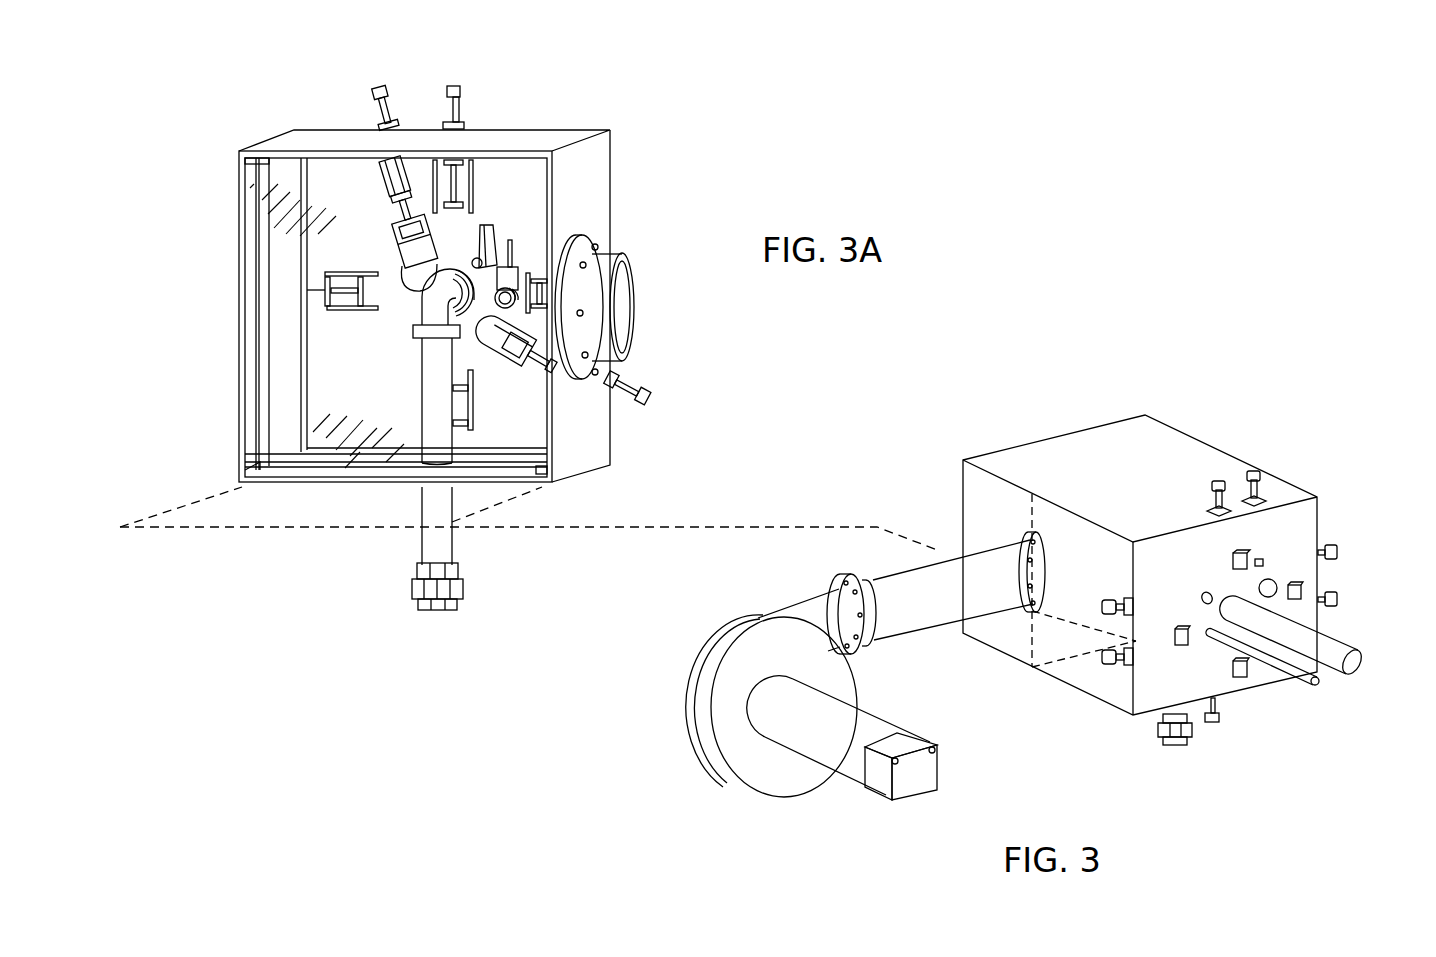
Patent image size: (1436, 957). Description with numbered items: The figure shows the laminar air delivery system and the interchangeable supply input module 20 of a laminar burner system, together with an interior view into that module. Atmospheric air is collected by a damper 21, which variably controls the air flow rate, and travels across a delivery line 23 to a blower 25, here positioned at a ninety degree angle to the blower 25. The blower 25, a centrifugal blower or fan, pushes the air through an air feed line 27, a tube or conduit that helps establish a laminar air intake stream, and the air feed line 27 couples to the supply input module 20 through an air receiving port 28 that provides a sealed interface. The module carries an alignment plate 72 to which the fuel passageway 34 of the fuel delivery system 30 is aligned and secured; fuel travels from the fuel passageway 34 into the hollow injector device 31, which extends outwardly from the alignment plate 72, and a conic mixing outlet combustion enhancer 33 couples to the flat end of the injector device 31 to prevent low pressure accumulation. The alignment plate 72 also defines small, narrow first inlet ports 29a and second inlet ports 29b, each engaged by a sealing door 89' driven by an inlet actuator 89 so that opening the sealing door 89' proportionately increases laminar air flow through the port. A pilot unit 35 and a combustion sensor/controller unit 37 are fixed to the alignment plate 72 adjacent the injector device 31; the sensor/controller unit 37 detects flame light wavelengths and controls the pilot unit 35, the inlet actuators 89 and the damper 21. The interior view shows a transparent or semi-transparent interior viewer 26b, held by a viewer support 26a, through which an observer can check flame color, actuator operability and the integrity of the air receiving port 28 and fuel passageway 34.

In FIG. 3A, the supply input module 20 is at (604, 107).
In FIG. 3, the damper 21 is at (918, 775).
In FIG. 3, the delivery line 23 is at (821, 732).
In FIG. 3, the blower 25 is at (821, 667).
In FIG. 3A, the viewer support 26a is at (262, 427).
In FIG. 3A, the interior viewer 26b is at (345, 440).
In FIG. 3A, the air feed line 27 is at (604, 273).
In FIG. 3, the air feed line 27 is at (1001, 597).
In FIG. 3A, the air receiving port 28 is at (580, 247).
In FIG. 3, the air receiving port 28 is at (1022, 546).
In FIG. 3A, the first inlet ports 29a is at (456, 212).
In FIG. 3, the first inlet ports 29a is at (1241, 553).
In FIG. 3A, the second inlet ports 29b is at (409, 262).
In FIG. 3, the second inlet ports 29b is at (1277, 597).
In FIG. 3A, the fuel delivery system 30 is at (424, 549).
In FIG. 3, the injector device 31 is at (1363, 651).
In FIG. 3, the mixing outlet combustion enhancer 33 is at (1298, 680).
In FIG. 3A, the fuel passageway 34 is at (432, 386).
In FIG. 3A, the pilot unit 35 is at (514, 268).
In FIG. 3A, the combustion sensor/controller unit 37 is at (486, 230).
In FIG. 3, the combustion sensor/controller unit 37 is at (1200, 594).
In FIG. 3A, the alignment plate 72 is at (343, 391).
In FIG. 3, the alignment plate 72 is at (1169, 572).
In FIG. 3A, the inlet actuators 89 is at (546, 243).
In FIG. 3, the inlet actuators 89 is at (1230, 554).
In FIG. 3A, the sealing door 89' is at (455, 294).